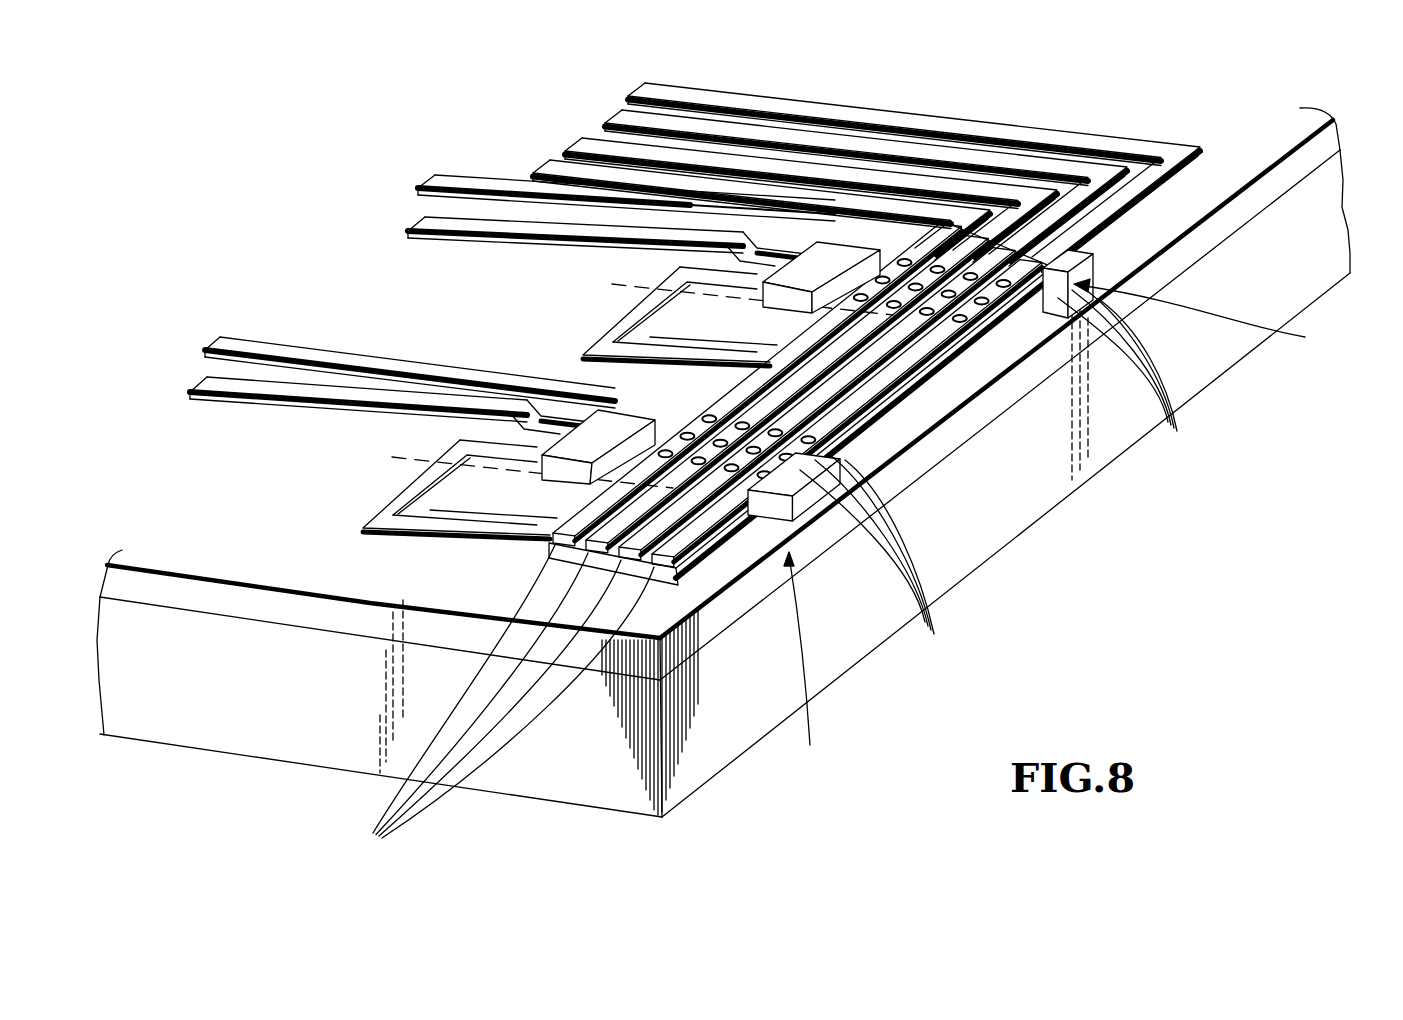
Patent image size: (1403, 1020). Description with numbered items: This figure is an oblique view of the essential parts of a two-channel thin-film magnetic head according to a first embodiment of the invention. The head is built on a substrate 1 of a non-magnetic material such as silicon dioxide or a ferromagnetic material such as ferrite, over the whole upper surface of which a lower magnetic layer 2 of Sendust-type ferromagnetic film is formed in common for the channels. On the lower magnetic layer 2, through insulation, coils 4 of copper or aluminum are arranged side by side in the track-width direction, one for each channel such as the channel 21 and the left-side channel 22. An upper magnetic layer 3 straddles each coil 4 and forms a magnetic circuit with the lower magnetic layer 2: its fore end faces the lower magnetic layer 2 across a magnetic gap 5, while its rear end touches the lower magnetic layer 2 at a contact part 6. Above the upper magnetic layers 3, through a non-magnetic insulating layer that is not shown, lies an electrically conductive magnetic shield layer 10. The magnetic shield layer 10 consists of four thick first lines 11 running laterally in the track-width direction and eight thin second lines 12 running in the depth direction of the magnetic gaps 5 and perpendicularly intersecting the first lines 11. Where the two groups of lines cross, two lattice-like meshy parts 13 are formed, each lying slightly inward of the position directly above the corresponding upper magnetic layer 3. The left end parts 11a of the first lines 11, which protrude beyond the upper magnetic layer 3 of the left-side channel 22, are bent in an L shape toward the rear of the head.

The substrate 1 is at (538, 787).
The lower magnetic layer 2 is at (708, 627).
The upper magnetic layer 3 is at (972, 567).
The coil 4 is at (387, 512).
The magnetic gap 5 is at (803, 533).
The contact part 6 is at (631, 382).
The magnetic shield layer 10 is at (929, 352).
The first lines 11 is at (497, 700).
The left end parts 11a is at (636, 86).
The second lines 12 is at (1004, 477).
The meshy parts 13 is at (700, 427).
The channel 21 is at (803, 662).
The left-side channel 22 is at (1208, 319).